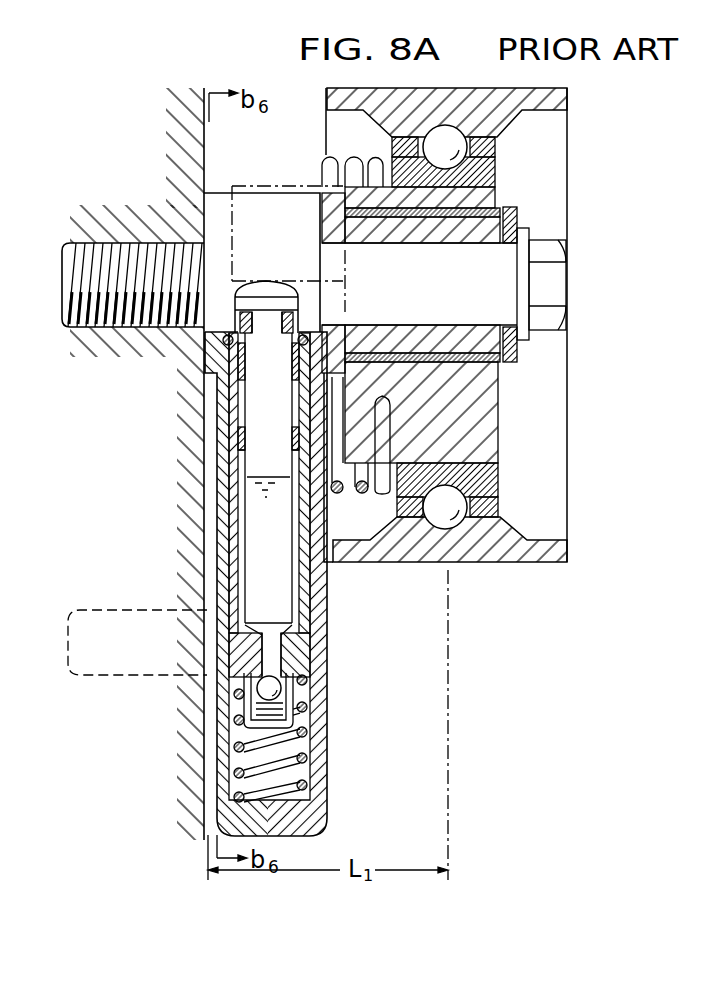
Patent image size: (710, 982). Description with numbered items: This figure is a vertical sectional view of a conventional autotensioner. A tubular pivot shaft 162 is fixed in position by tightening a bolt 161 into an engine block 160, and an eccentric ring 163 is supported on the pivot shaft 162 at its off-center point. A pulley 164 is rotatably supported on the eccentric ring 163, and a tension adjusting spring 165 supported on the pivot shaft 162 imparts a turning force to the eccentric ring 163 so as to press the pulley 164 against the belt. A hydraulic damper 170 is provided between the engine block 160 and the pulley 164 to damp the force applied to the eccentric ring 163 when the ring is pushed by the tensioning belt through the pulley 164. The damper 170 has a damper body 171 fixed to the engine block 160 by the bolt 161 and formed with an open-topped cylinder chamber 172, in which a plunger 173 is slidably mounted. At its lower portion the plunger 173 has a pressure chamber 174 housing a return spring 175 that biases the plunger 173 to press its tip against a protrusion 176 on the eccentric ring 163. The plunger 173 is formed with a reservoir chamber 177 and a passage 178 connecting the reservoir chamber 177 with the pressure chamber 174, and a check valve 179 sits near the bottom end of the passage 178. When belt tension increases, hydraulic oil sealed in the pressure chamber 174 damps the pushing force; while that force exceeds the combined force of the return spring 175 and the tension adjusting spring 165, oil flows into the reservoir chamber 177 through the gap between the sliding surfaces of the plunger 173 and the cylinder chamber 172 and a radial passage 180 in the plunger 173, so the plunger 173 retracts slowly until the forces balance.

The engine block 160 is at (190, 125).
The bolt 161 is at (505, 278).
The tubular pivot shaft 162 is at (495, 231).
The eccentric ring 163 is at (480, 398).
The pulley 164 is at (548, 97).
The tension adjusting spring 165 is at (326, 160).
The hydraulic damper 170 is at (332, 630).
The damper body 171 is at (223, 505).
The cylinder chamber 172 is at (233, 612).
The plunger 173 is at (300, 596).
The pressure chamber 174 is at (300, 745).
The return spring 175 is at (300, 787).
The protrusion 176 is at (277, 183).
The reservoir chamber 177 is at (253, 390).
The passage 178 is at (273, 652).
The check valve 179 is at (274, 697).
The radial passage 180 is at (240, 437).